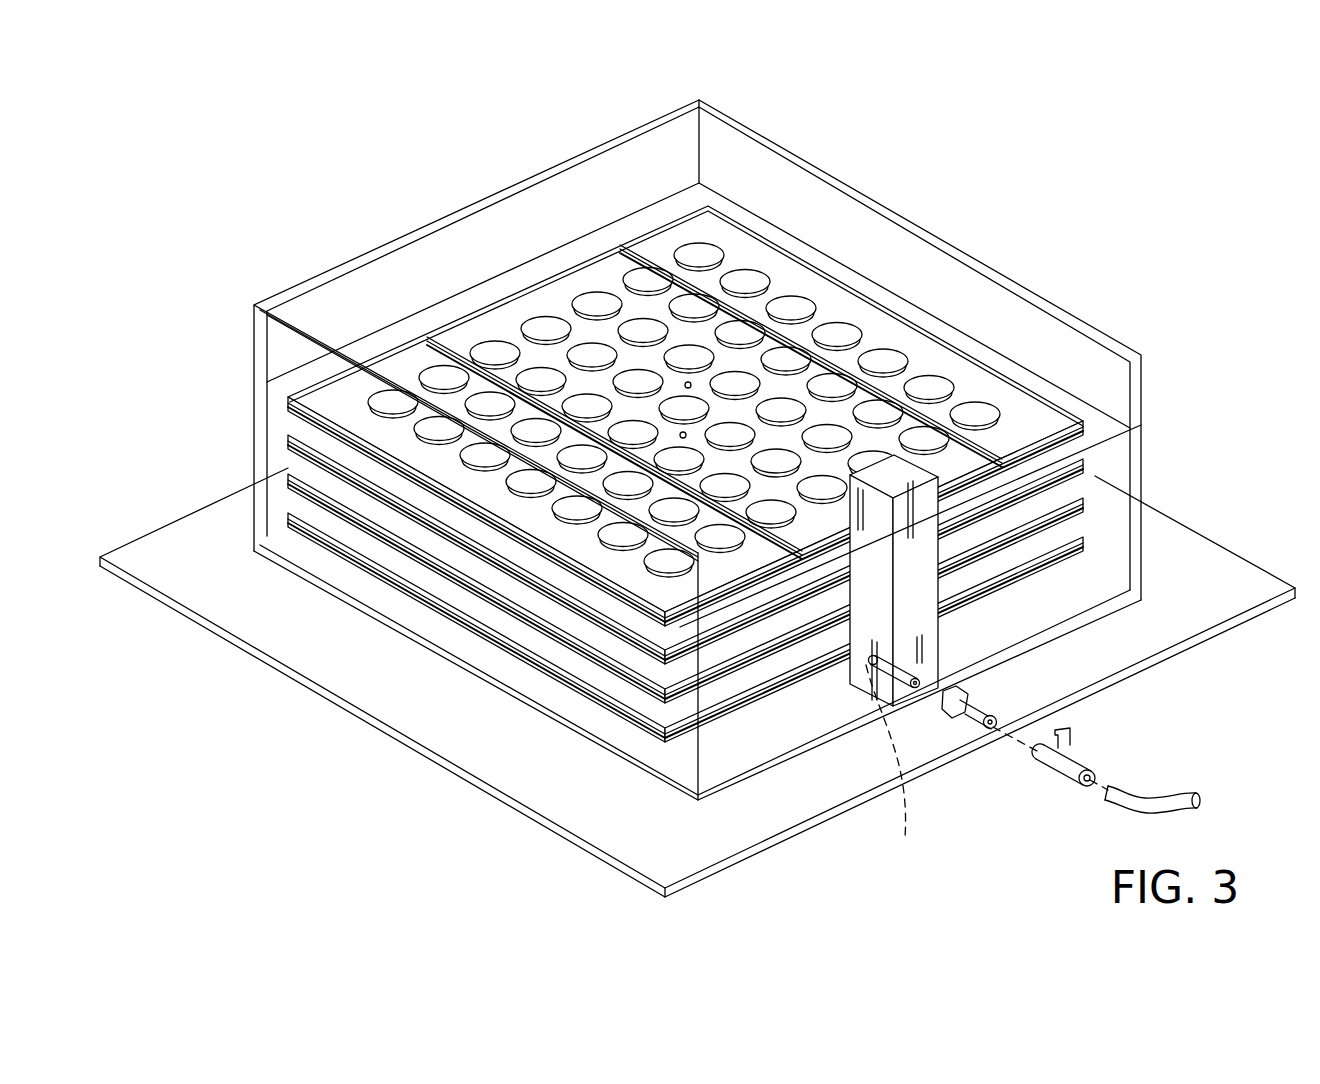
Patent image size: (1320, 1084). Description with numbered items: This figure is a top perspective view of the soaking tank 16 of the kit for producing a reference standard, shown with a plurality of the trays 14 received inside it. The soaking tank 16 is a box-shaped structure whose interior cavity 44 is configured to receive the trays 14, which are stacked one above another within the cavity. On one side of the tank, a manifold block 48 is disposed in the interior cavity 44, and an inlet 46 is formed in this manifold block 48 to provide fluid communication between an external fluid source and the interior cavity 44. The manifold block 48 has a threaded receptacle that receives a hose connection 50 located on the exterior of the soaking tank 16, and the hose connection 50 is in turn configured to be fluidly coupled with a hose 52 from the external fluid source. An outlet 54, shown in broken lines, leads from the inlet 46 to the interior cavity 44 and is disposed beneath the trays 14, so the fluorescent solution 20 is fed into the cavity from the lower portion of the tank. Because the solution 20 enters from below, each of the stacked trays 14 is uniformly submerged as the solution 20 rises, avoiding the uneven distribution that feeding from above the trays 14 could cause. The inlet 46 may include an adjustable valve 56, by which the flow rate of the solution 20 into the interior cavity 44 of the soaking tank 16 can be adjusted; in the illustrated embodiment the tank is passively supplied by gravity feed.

The tray 14 is at (800, 278).
The soaking tank 16 is at (466, 200).
The fluorescent solution 20 is at (1100, 430).
The interior cavity 44 is at (636, 172).
The inlet 46 is at (930, 669).
The manifold block 48 is at (920, 590).
The hose connection 50 is at (993, 730).
The hose 52 is at (1180, 790).
The outlet 54 is at (893, 768).
The adjustable valve 56 is at (1060, 772).